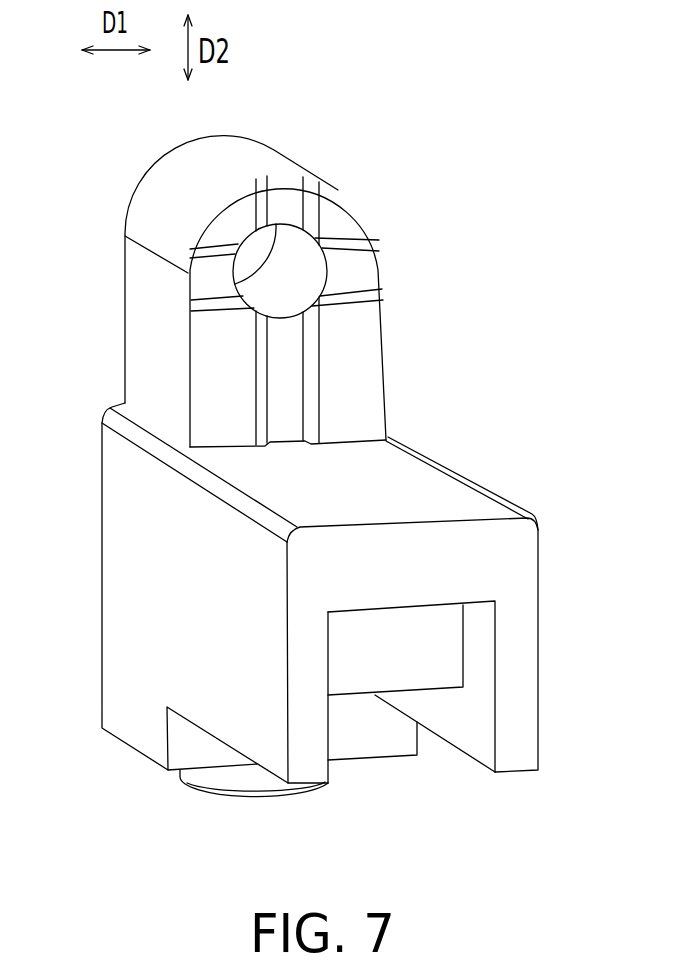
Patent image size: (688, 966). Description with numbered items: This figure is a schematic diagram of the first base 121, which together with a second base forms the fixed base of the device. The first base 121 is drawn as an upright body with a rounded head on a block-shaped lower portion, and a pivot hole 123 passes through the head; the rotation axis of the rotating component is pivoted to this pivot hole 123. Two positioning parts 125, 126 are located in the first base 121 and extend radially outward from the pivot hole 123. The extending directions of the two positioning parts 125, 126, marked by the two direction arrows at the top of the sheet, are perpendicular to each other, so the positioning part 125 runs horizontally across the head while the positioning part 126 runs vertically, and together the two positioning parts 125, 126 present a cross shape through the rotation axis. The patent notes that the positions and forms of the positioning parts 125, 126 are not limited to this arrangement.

The first base 121 is at (422, 167).
The pivot hole 123 is at (297, 263).
The positioning part 125 is at (357, 278).
The positioning part 126 is at (290, 373).